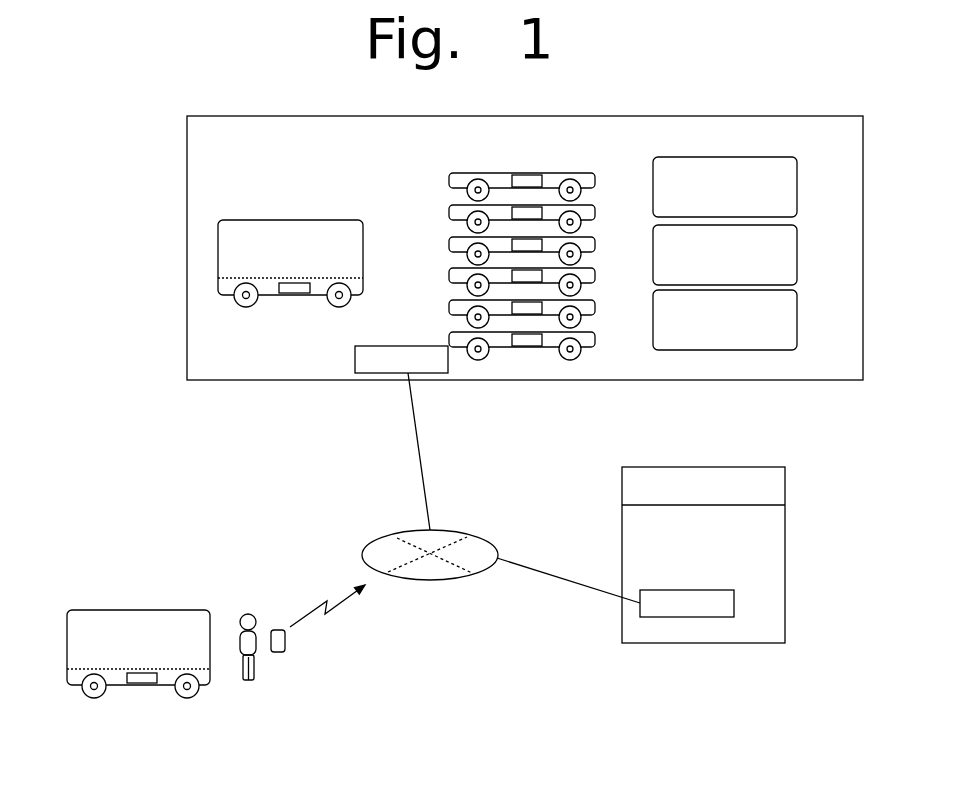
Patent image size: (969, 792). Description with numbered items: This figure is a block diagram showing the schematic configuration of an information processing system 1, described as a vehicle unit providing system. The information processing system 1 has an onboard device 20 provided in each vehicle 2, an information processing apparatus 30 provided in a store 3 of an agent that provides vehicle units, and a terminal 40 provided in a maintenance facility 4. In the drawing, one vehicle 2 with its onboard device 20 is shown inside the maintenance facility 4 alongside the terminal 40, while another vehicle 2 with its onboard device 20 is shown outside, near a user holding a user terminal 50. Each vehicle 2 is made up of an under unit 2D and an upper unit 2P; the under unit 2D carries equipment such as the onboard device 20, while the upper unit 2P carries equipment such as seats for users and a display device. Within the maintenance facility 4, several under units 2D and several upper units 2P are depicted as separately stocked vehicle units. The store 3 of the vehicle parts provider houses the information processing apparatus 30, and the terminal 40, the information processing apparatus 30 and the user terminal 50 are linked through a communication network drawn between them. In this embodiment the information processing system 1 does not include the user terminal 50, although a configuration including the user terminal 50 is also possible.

The information processing system 1 is at (73, 229).
The vehicle 2 is at (300, 222).
The under unit 2D is at (600, 167).
The upper unit 2P is at (805, 157).
The store 3 is at (620, 492).
The maintenance facility 4 is at (298, 381).
The onboard device 20 is at (292, 296).
The information processing apparatus 30 is at (692, 588).
The terminal 40 is at (406, 345).
The user terminal 50 is at (287, 643).